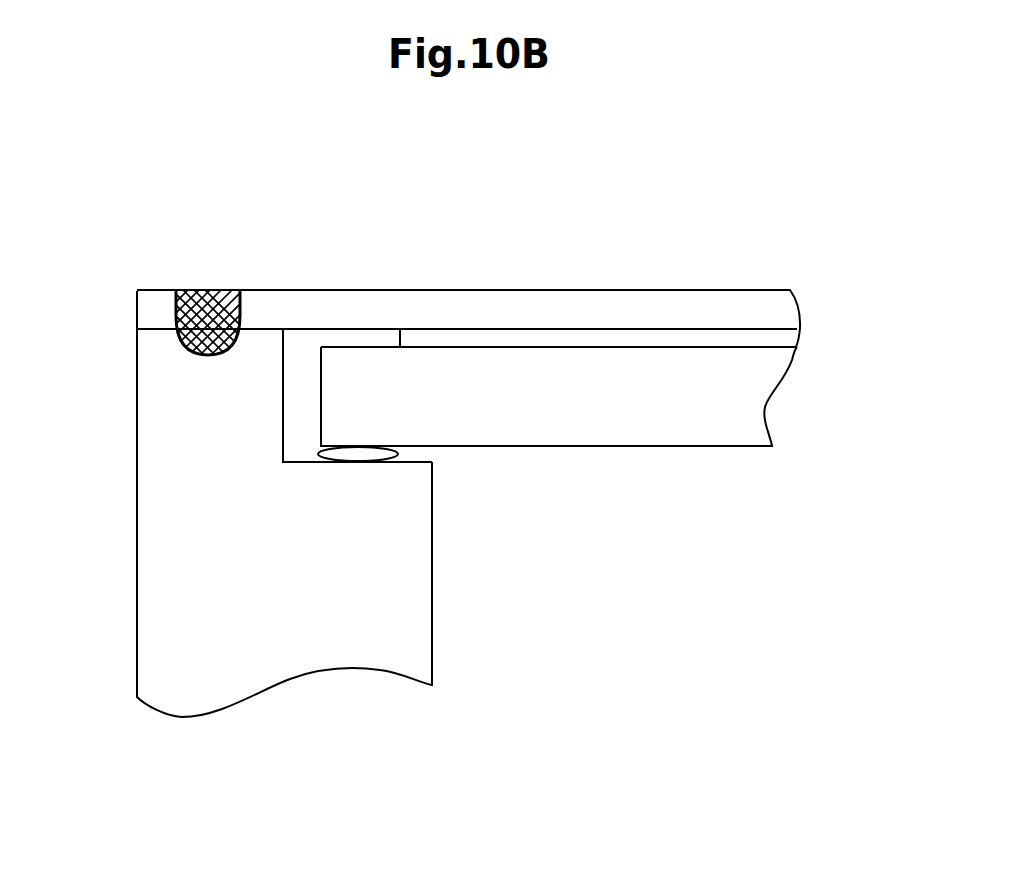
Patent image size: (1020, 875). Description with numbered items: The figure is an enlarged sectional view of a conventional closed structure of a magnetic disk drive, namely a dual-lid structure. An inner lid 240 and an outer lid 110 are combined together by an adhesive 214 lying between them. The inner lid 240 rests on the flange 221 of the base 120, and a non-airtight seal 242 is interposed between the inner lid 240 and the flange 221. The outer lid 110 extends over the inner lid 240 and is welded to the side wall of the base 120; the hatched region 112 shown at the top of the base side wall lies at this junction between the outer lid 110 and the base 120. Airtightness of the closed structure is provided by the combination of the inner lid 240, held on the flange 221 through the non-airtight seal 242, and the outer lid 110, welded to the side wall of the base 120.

The outer lid 110 is at (347, 290).
The seal member 112 is at (210, 289).
The base 120 is at (137, 500).
The adhesive 214 is at (800, 333).
The flange 221 is at (305, 465).
The inner lid 240 is at (723, 448).
The non-airtight seal 242 is at (397, 458).